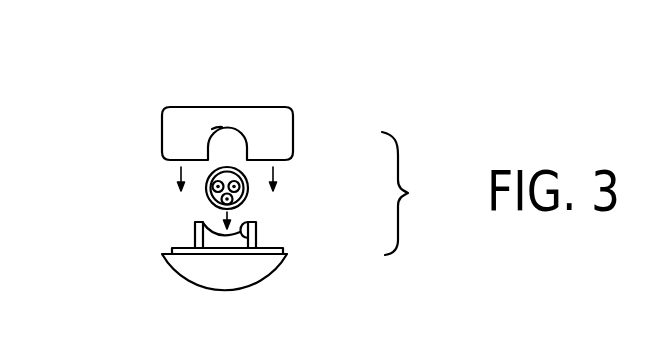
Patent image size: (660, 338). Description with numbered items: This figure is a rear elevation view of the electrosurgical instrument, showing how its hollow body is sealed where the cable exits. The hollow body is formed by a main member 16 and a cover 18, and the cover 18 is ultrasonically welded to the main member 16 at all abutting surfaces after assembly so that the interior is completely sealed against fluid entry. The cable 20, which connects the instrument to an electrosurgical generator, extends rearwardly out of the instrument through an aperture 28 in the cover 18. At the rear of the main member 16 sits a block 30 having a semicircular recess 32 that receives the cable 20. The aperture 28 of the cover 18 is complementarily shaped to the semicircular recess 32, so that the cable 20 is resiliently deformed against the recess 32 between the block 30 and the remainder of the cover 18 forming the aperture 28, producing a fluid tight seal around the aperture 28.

The main member 16 is at (207, 288).
The cover 18 is at (257, 107).
The cable 20 is at (248, 195).
The aperture 28 is at (222, 127).
The block 30 is at (195, 225).
The semicircular recess 32 is at (256, 228).